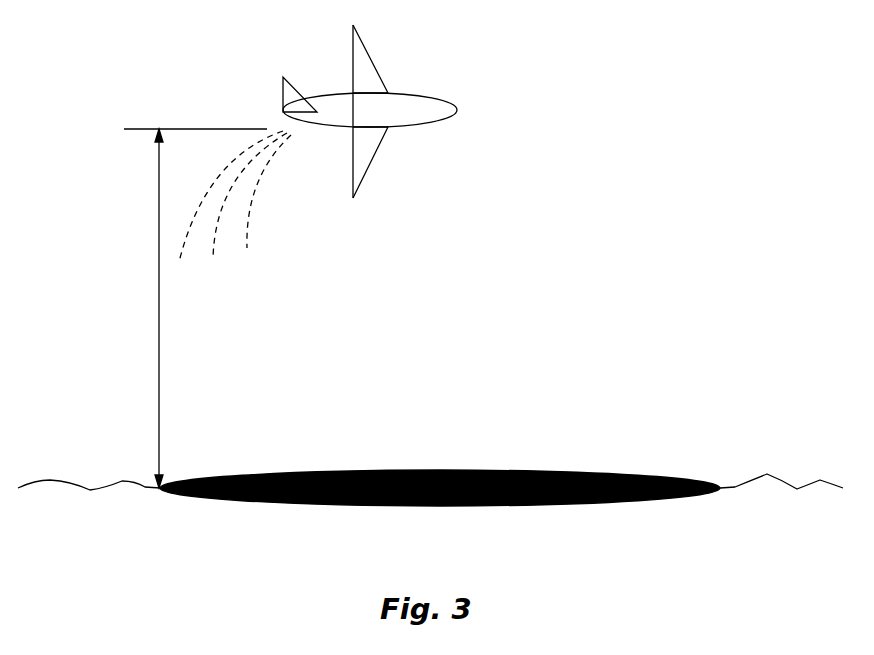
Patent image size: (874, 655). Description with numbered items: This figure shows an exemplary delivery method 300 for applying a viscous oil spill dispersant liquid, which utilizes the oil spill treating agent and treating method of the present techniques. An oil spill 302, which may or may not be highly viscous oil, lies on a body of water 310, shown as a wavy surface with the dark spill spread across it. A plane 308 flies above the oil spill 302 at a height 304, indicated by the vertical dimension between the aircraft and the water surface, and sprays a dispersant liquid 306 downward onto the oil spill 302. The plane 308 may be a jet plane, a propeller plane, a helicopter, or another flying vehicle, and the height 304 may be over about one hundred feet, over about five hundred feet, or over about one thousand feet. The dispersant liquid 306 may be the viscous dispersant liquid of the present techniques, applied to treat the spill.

The system 300 is at (105, 74).
The oil spill 302 is at (460, 470).
The height 304 is at (159, 315).
The dispersant liquid 306 is at (253, 257).
The plane 308 is at (440, 123).
The body of water 310 is at (131, 482).